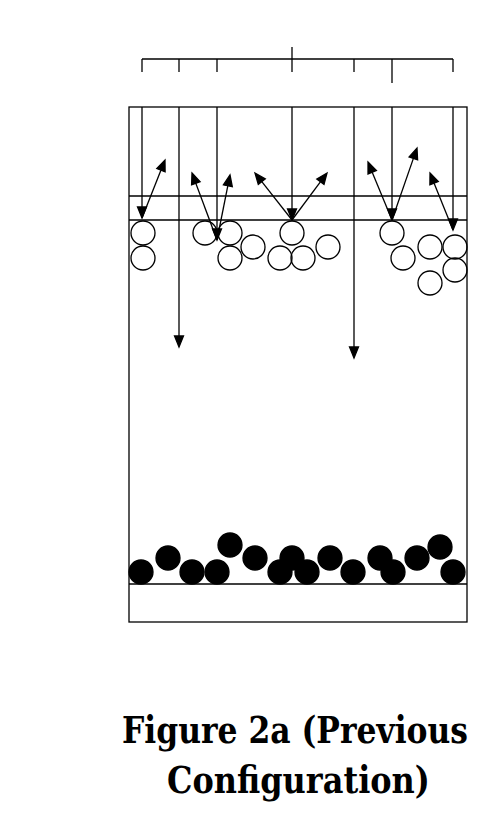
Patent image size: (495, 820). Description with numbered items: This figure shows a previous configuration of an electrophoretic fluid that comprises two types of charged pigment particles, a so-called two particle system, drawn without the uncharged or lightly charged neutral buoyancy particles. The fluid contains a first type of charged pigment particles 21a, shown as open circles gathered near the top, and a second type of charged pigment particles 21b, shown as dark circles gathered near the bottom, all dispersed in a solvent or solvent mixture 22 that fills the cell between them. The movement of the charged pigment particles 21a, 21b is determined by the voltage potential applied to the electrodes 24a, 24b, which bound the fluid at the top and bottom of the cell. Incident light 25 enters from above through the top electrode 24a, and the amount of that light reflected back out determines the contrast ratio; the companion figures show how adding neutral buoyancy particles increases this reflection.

The charged pigment particles 21a is at (142, 258).
The charged pigment particles 21b is at (118, 572).
The solvent or solvent mixture 22 is at (154, 397).
The electrode 24a is at (118, 208).
The electrode 24b is at (298, 601).
The incident light 25 is at (297, 46).